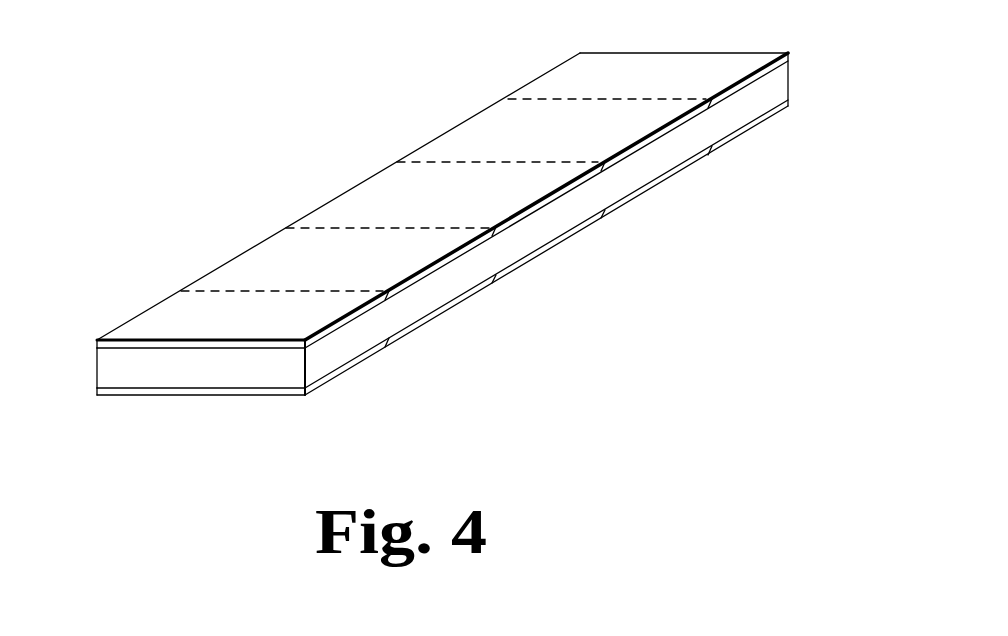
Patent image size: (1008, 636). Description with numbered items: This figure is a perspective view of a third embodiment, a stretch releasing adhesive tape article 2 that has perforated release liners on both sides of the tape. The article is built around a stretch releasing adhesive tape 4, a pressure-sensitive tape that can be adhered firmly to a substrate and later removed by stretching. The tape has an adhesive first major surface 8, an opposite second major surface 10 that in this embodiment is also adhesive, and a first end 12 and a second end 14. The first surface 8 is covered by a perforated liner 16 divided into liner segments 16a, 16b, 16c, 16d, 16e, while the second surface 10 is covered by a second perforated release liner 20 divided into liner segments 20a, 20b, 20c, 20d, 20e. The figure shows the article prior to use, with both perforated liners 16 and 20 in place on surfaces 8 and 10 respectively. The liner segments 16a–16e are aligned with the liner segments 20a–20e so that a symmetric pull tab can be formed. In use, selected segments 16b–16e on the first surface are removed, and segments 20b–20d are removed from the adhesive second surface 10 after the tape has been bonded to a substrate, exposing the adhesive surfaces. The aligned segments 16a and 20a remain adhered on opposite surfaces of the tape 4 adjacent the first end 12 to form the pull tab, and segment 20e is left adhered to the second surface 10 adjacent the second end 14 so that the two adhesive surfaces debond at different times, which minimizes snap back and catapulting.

The stretch releasing adhesive tape article 2 is at (448, 230).
The stretch releasing adhesive tape 4 is at (336, 363).
The adhesive first major surface 8 is at (118, 350).
The second major surface 10 is at (192, 388).
The first end 12 is at (150, 370).
The second end 14 is at (788, 78).
The perforated liner 16 is at (424, 181).
The liner segment 16a is at (177, 312).
The liner segment 16b is at (293, 255).
The liner segment 16c is at (388, 192).
The liner segment 16d is at (463, 143).
The liner segment 16e is at (583, 75).
The second perforated release liner 20 is at (570, 244).
The liner segment 20a is at (362, 358).
The liner segment 20b is at (425, 325).
The liner segment 20c is at (552, 245).
The liner segment 20d is at (673, 177).
The liner segment 20e is at (758, 125).